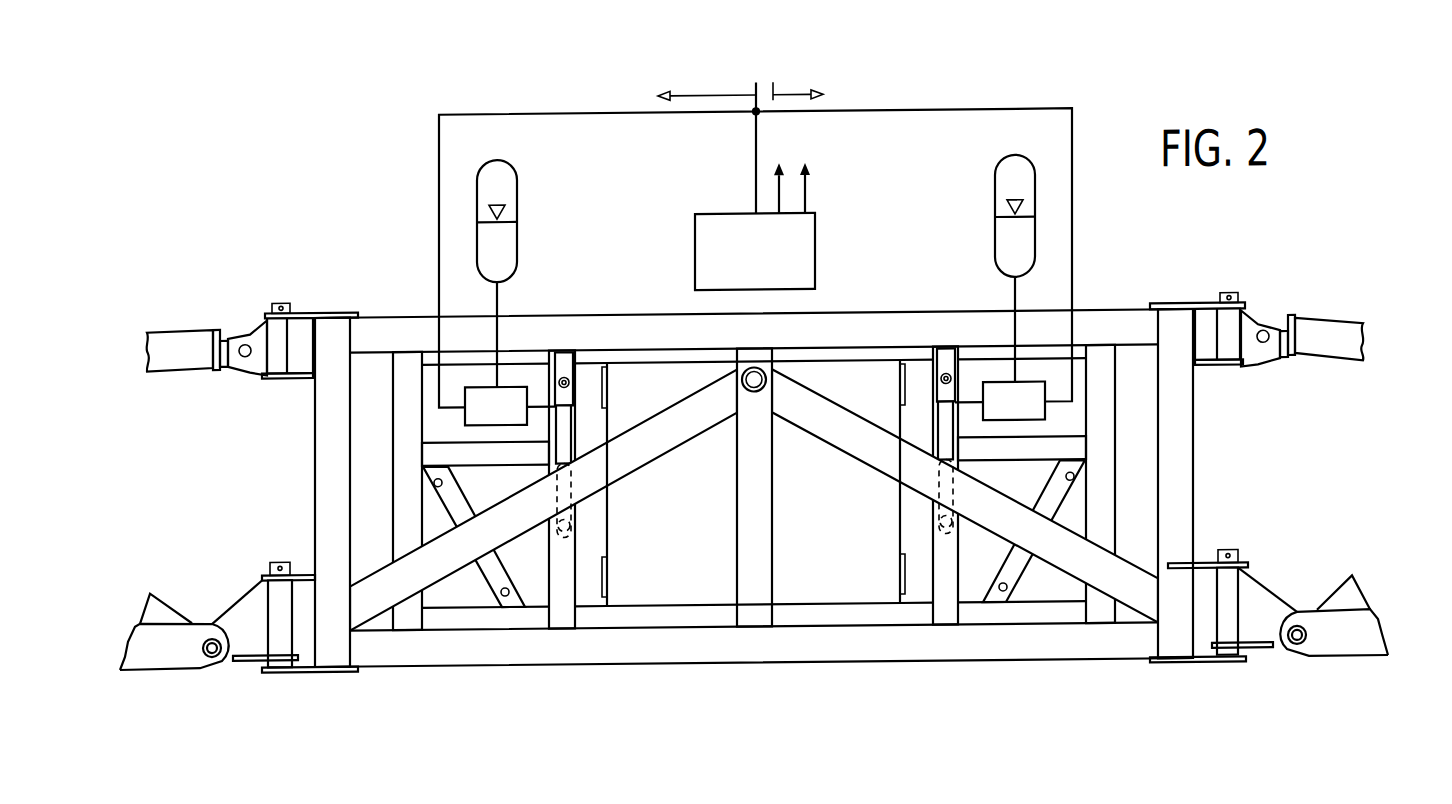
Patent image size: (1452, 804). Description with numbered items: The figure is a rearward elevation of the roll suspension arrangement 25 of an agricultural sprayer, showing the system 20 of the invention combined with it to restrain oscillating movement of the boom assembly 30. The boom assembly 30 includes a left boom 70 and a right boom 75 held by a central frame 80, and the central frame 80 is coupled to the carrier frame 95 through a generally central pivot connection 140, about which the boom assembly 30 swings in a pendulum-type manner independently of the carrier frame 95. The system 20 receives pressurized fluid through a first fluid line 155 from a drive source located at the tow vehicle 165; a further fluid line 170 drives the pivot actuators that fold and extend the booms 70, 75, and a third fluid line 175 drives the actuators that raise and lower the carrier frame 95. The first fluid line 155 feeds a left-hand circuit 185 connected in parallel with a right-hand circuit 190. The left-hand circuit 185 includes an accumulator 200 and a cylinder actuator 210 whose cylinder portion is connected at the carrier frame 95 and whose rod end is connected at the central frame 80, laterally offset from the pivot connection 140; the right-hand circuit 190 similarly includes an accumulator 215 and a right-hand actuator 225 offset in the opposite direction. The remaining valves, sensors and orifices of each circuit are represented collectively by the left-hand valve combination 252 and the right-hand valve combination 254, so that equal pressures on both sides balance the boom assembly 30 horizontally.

The system 20 is at (992, 75).
The roll suspension arrangement 25 is at (704, 467).
The boom assembly 30 is at (335, 245).
The left boom 70 is at (168, 319).
The right boom 75 is at (1338, 306).
The central frame 80 is at (884, 668).
The carrier frame 95 is at (698, 630).
The central pivot connection 140 is at (758, 417).
The first fluid line 155 is at (755, 146).
The tow vehicle 165 is at (816, 268).
The fluid line 170 is at (781, 205).
The third fluid line 175 is at (808, 185).
The left-hand circuit 185 is at (692, 96).
The right-hand circuit 190 is at (793, 98).
The accumulator 200 is at (534, 178).
The cylinder actuator 210 is at (540, 441).
The accumulator 215 is at (1060, 221).
The right-hand actuator 225 is at (973, 438).
The left-hand valve combination 252 is at (487, 427).
The right-hand valve combination 254 is at (1023, 427).